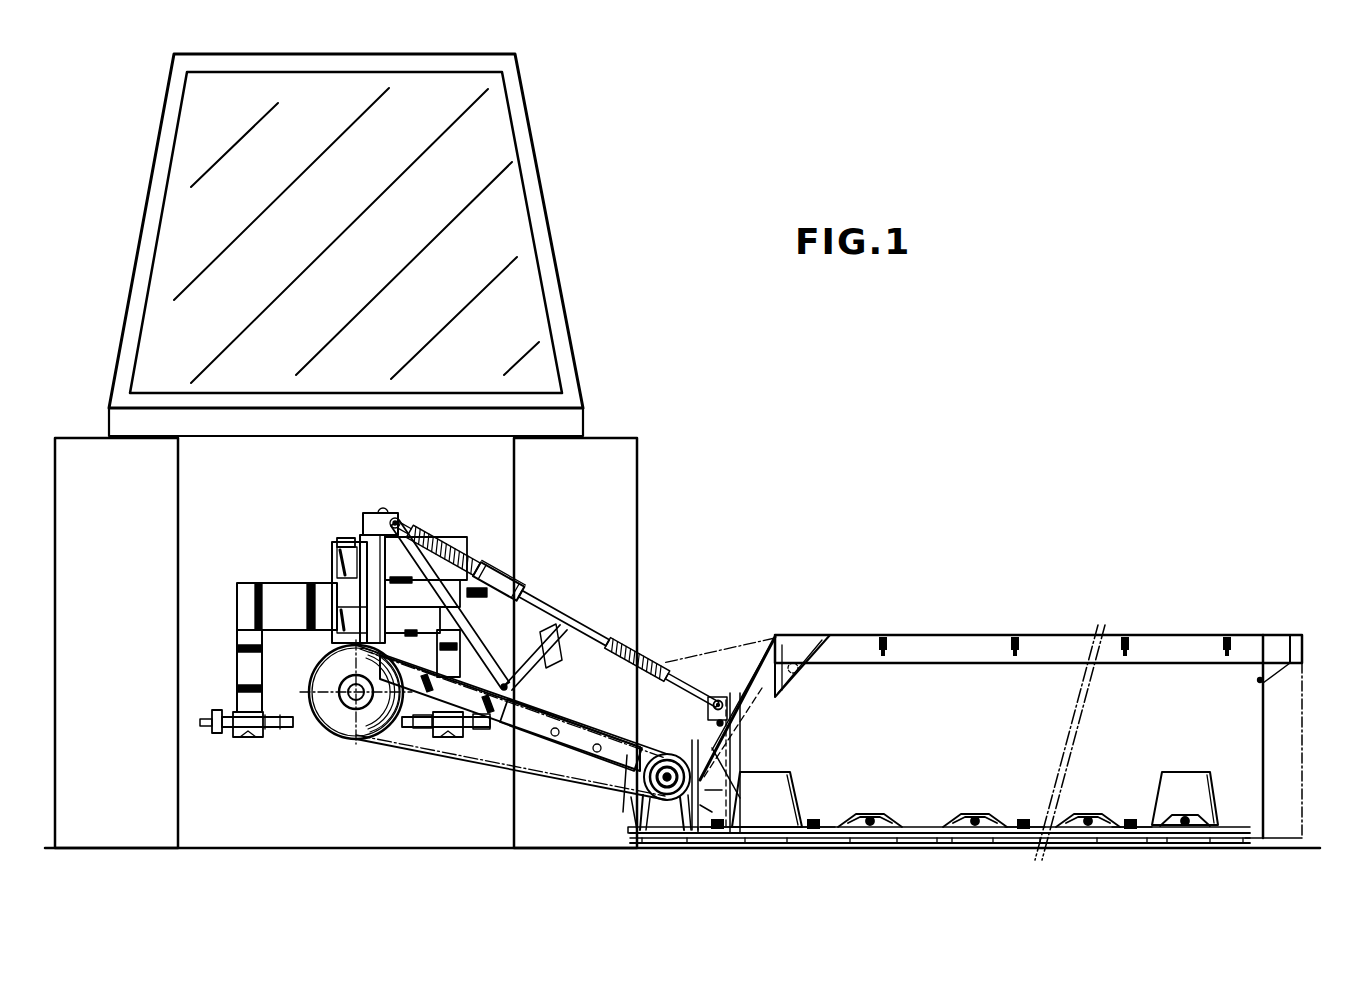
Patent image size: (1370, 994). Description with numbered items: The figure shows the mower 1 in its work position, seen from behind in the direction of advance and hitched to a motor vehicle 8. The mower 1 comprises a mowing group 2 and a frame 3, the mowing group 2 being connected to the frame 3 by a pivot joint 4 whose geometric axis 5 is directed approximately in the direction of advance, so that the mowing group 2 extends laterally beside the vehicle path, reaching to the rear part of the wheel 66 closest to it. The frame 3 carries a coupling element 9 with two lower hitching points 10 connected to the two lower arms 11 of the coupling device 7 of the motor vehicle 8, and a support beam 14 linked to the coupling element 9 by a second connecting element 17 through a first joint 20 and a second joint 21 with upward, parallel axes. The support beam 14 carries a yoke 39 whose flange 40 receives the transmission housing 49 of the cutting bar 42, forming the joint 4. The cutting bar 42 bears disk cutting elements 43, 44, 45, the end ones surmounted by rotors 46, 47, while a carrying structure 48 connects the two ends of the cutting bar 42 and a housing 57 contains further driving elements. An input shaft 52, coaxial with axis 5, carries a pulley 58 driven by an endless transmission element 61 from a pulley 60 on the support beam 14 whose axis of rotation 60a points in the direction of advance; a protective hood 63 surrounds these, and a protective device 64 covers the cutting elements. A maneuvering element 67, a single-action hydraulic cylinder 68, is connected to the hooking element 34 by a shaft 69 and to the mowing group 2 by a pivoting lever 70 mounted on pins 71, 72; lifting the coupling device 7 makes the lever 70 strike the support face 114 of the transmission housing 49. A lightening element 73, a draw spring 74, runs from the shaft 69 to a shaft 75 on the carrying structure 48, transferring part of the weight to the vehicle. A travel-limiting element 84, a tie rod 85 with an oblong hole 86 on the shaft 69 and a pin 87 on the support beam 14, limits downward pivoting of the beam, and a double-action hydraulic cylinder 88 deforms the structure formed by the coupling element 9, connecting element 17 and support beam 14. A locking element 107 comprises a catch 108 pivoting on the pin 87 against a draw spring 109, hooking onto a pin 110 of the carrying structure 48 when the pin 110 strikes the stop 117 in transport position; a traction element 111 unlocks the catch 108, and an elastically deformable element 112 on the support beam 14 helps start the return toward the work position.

The mower 1 is at (847, 512).
The mowing group 2 is at (968, 732).
The frame 3 is at (237, 628).
The joint 4 is at (701, 813).
The geometric axis 5 is at (717, 800).
The coupling device 7 is at (212, 738).
The motor vehicle 8 is at (547, 255).
The coupling element 9 is at (248, 583).
The lower hitching points 10 is at (233, 737).
The lower arms 11 is at (228, 708).
The support beam 14 is at (435, 690).
The second connecting element 17 is at (337, 568).
The first joint 20 is at (347, 538).
The second joint 21 is at (361, 535).
The hooking element 34 is at (374, 512).
The yoke 39 is at (597, 786).
The flange 40 is at (627, 760).
The cutting bar 42 is at (903, 849).
The cutting element 43 is at (813, 820).
The cutting element 44 is at (892, 816).
The cutting element 45 is at (1218, 821).
The rotor 46 is at (789, 776).
The rotor 47 is at (1208, 790).
The carrying structure 48 is at (986, 633).
The transmission housing 49 is at (648, 833).
The input shaft 52 is at (671, 752).
The housing 57 is at (1142, 843).
The pulley 58 is at (688, 833).
The pulley 60 is at (328, 714).
The axis of rotation 60a is at (345, 690).
The endless transmission element 61 is at (463, 759).
The protective hood 63 is at (366, 746).
The protective device 64 is at (1303, 748).
The wheel 66 is at (637, 450).
The maneuvering element 67 is at (510, 552).
The single-action hydraulic cylinder 68 is at (485, 552).
The shaft 69 is at (401, 521).
The pivoting lever 70 is at (722, 706).
The pin 71 is at (719, 766).
The pin 72 is at (719, 700).
The lightening element 73 is at (664, 661).
The draw spring 74 is at (666, 656).
The shaft 75 is at (722, 720).
The travel-limiting element 84 is at (531, 594).
The tie rod 85 is at (481, 650).
The oblong hole 86 is at (388, 506).
The pin 87 is at (520, 707).
The double-action hydraulic cylinder 88 is at (446, 525).
The locking element 107 is at (569, 639).
The catch 108 is at (560, 666).
The draw spring 109 is at (548, 693).
The pin 110 is at (794, 662).
The traction element 111 is at (485, 424).
The elastically deformable element 112 is at (571, 737).
The support face 114 is at (724, 793).
The stop 117 is at (524, 665).